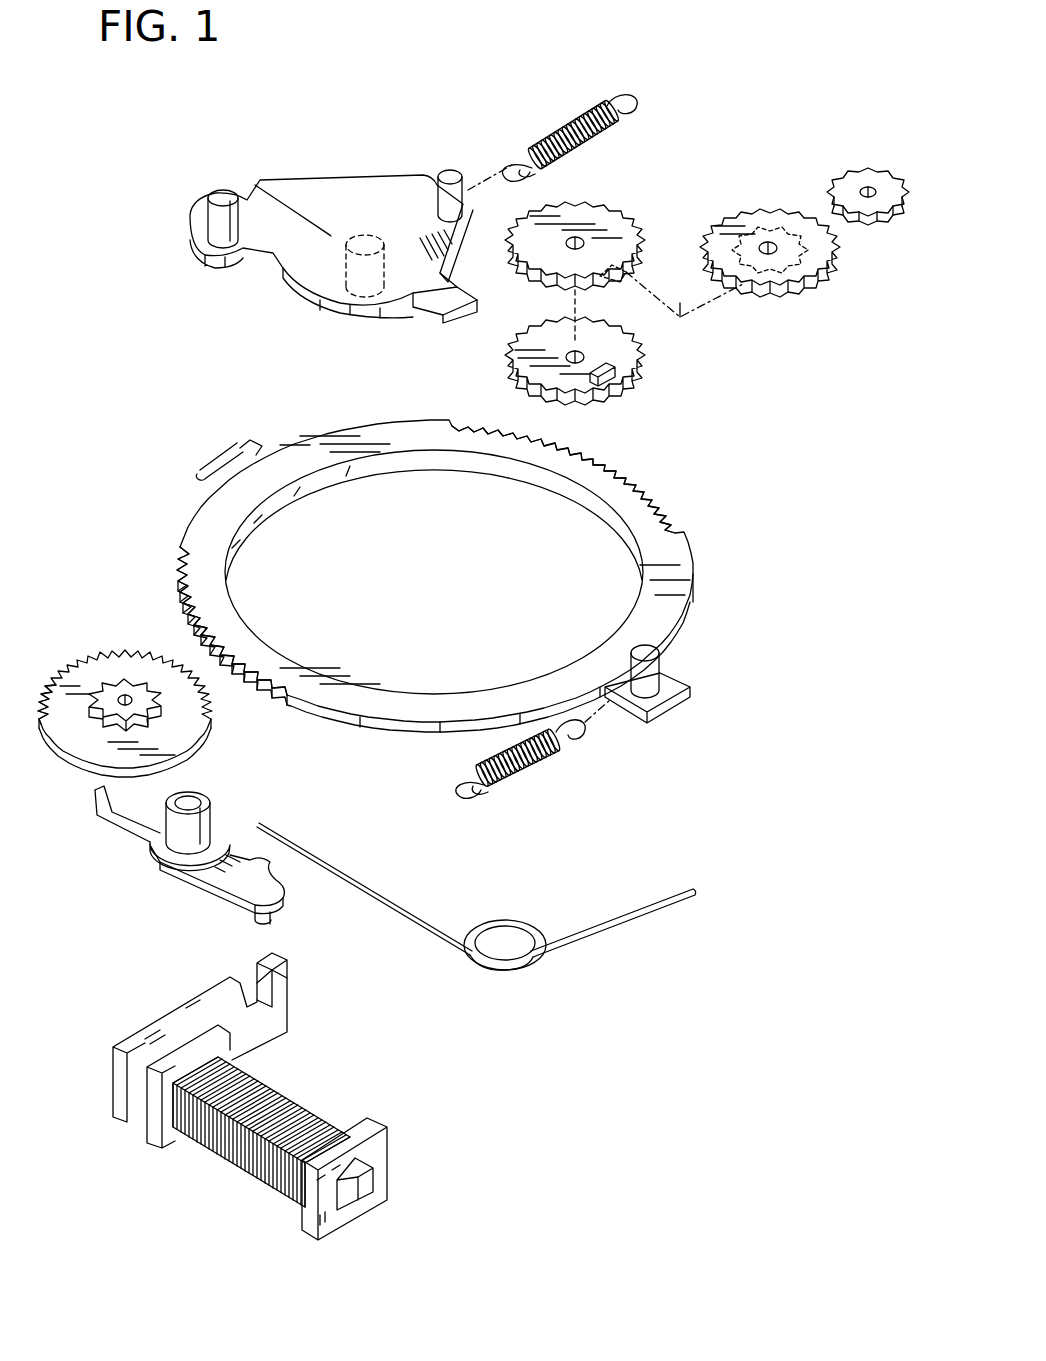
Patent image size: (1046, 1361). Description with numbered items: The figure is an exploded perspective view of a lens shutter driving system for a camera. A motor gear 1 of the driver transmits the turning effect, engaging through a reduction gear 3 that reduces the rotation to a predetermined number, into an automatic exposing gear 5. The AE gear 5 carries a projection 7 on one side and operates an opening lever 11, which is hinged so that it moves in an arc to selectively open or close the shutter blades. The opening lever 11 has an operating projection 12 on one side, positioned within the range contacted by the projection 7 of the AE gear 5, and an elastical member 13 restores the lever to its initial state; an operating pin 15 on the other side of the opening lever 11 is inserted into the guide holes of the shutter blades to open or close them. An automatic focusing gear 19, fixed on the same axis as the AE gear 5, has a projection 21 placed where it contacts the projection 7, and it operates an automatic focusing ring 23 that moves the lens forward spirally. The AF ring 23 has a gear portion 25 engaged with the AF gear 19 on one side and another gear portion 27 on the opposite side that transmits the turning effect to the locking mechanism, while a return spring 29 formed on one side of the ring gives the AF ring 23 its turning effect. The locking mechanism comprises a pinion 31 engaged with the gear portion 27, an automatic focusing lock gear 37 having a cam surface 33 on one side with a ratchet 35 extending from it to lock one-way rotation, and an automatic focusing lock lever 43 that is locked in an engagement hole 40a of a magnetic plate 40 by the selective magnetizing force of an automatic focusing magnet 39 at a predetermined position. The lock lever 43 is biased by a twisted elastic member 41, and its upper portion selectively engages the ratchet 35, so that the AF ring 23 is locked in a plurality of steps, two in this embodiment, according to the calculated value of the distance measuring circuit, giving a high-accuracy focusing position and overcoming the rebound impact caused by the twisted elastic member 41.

The motor gear 1 is at (870, 180).
The reduction gear 3 is at (768, 212).
The automatic exposing (AE) gear 5 is at (607, 218).
The projection 7 is at (650, 262).
The opening lever 11 is at (363, 195).
The operating projection 12 is at (440, 315).
The elastical member 13 is at (560, 125).
The operating pin 15 is at (225, 197).
The automatic focusing (AF) gear 19 is at (640, 357).
The projection 21 is at (608, 392).
The automatic focusing ring 23 is at (688, 612).
The gear portion 25 is at (672, 503).
The gear portion 27 is at (182, 558).
The return spring 29 is at (540, 773).
The pinion 31 is at (125, 690).
The cam surface 33 is at (155, 719).
The ratchet 35 is at (55, 738).
The automatic focusing lock gear 37 is at (82, 668).
The automatic focusing magnet 39 is at (300, 1100).
The magnetic plate 40 is at (241, 1050).
The engagement hole 40a is at (272, 1005).
The twisted elastic member 41 is at (615, 935).
The automatic focusing lock lever 43 is at (222, 882).